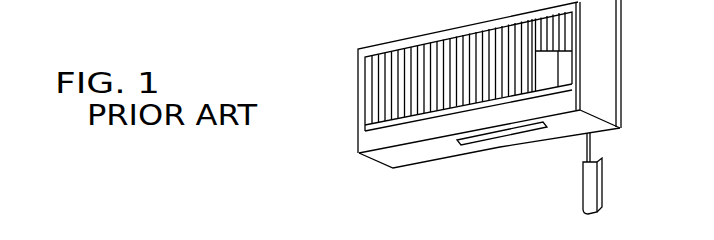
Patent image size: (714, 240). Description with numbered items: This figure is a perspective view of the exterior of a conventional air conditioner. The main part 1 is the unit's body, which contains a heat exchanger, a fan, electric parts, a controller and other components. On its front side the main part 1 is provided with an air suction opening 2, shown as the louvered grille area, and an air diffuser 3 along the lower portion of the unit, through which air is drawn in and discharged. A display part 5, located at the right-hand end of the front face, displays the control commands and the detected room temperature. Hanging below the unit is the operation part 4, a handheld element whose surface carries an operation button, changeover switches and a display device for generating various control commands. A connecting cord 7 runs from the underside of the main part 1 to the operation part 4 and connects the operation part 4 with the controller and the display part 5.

The main part 1 is at (607, 58).
The air suction opening 2 is at (375, 92).
The air diffuser 3 is at (462, 160).
The operation part 4 is at (583, 188).
The display part 5 is at (547, 67).
The connecting cord 7 is at (595, 150).